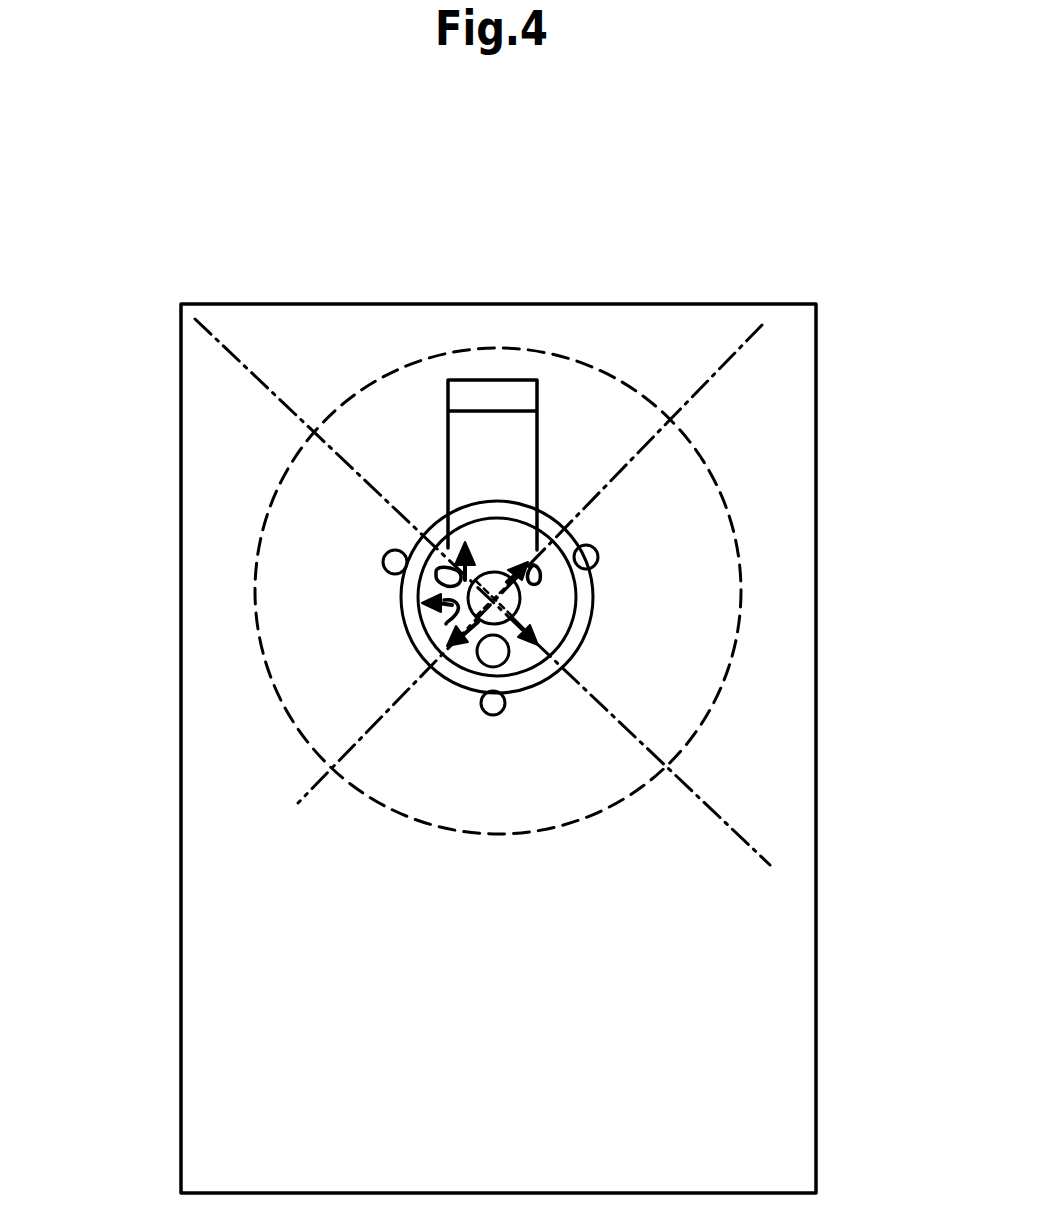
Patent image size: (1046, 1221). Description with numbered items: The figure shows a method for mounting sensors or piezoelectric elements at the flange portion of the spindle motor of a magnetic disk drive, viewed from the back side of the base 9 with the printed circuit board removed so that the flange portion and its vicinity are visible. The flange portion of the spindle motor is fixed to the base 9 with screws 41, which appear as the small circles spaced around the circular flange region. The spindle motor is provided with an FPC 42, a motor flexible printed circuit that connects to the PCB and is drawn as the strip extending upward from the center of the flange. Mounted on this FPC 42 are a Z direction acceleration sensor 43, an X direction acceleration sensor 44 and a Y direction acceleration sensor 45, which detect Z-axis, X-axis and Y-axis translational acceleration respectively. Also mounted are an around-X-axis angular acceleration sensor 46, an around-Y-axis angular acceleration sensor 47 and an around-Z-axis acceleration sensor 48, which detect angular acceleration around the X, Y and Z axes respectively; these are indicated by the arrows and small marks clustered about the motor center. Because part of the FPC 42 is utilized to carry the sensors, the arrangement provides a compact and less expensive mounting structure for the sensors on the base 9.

The base 9 is at (632, 945).
The screws 41 is at (387, 554).
The FPC 42 is at (508, 453).
The Z direction acceleration sensor 43 is at (515, 662).
The X direction acceleration sensor 44 is at (422, 606).
The Y direction acceleration sensor 45 is at (545, 621).
The around-X-axis angular acceleration sensor 46 is at (543, 588).
The around-Y-axis angular acceleration sensor 47 is at (466, 538).
The around-Z-axis acceleration sensor 48 is at (435, 576).